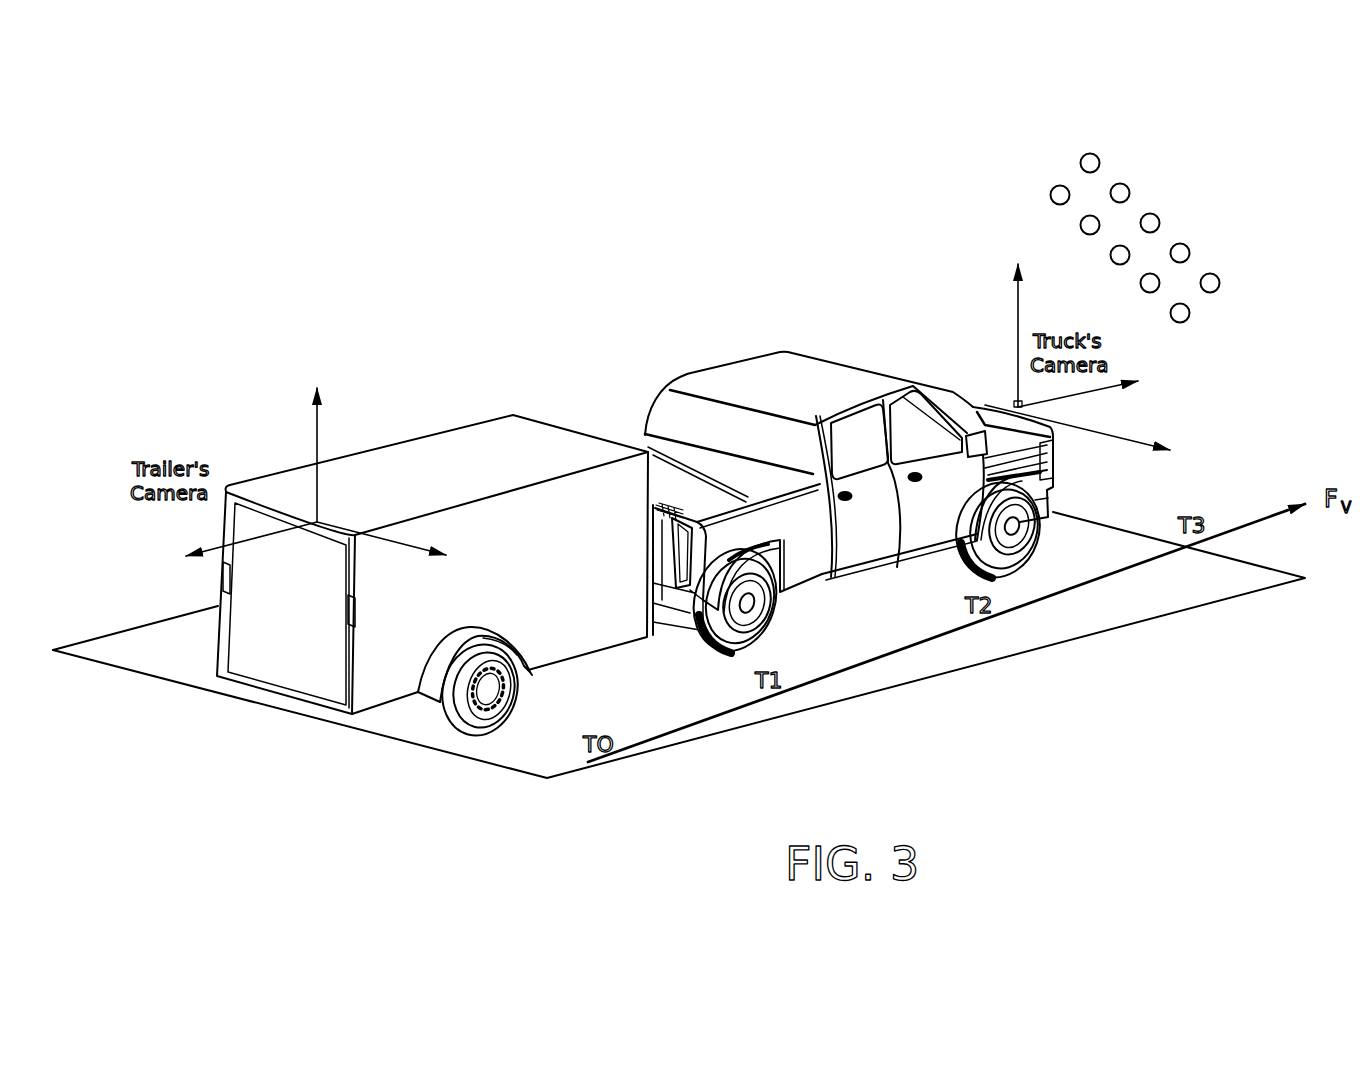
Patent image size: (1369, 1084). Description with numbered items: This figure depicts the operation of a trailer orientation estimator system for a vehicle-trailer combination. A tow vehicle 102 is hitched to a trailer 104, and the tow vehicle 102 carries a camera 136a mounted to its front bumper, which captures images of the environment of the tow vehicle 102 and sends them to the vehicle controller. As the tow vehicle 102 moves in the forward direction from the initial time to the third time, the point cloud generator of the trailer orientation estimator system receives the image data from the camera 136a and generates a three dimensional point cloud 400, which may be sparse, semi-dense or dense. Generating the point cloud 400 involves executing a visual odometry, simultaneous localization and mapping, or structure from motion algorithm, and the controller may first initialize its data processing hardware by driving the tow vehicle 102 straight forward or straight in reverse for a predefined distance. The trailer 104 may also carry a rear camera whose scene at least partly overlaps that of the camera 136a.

The tow vehicle 102 is at (742, 370).
The trailer 104 is at (450, 445).
The camera 136a is at (1018, 404).
The 3D point cloud 400 is at (1176, 181).